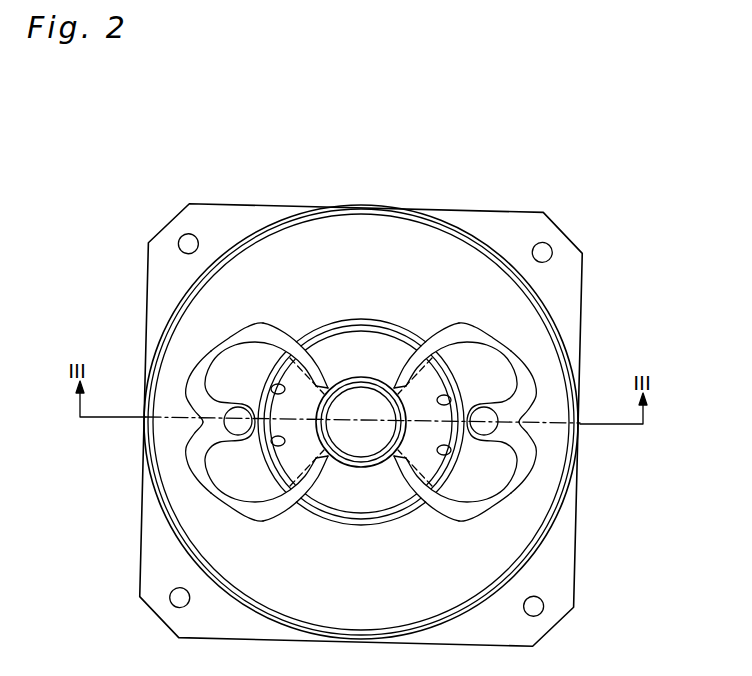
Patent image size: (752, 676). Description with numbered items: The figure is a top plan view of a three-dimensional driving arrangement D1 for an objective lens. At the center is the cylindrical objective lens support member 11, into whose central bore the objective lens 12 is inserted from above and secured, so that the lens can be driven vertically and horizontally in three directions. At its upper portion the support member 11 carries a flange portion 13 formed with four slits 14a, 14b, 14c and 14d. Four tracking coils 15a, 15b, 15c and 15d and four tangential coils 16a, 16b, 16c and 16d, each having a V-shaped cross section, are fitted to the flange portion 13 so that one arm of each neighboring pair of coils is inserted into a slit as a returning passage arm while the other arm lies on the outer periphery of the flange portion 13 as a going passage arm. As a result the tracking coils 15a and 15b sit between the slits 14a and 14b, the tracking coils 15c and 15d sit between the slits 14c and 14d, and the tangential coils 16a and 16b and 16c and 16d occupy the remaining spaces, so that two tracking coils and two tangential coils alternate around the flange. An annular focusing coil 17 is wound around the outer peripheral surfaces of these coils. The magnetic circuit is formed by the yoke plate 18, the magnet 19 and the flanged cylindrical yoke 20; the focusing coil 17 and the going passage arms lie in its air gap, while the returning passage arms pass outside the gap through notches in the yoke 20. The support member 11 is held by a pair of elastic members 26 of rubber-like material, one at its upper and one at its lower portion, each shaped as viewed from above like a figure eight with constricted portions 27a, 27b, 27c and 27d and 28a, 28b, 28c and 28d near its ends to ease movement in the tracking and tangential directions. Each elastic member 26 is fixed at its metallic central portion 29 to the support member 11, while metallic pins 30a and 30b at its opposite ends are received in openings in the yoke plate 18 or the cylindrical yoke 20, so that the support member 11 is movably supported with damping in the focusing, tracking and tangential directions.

The objective lens support member 11 is at (367, 405).
The objective lens 12 is at (398, 365).
The flange portion 13 is at (343, 350).
The slit 14a is at (325, 360).
The slit 14b is at (317, 490).
The slit 14c is at (412, 500).
The slit 14d is at (415, 350).
The tracking coil 15a is at (271, 389).
The tracking coil 15b is at (271, 441).
The tracking coil 15c is at (451, 450).
The tracking coil 15d is at (451, 400).
The tangential coil 16a is at (382, 360).
The tangential coil 16b is at (303, 337).
The tangential coil 16c is at (348, 485).
The tangential coil 16d is at (380, 490).
The focusing coil 17 is at (300, 500).
The yoke plate 18 is at (248, 260).
The magnet 19 is at (282, 223).
The flanged cylindrical yoke 20 is at (205, 215).
The elastic member 26 is at (222, 363).
The constricted portion 27a is at (213, 387).
The constricted portion 27b is at (220, 460).
The constricted portion 27c is at (507, 453).
The constricted portion 27d is at (510, 393).
The constricted portion 28a is at (472, 362).
The constricted portion 28b is at (253, 363).
The constricted portion 28c is at (257, 490).
The constricted portion 28d is at (467, 482).
The central portion 29 is at (366, 470).
The pin 30a is at (226, 428).
The pin 30b is at (497, 427).
The three-dimensional driving arrangement D1 is at (534, 166).